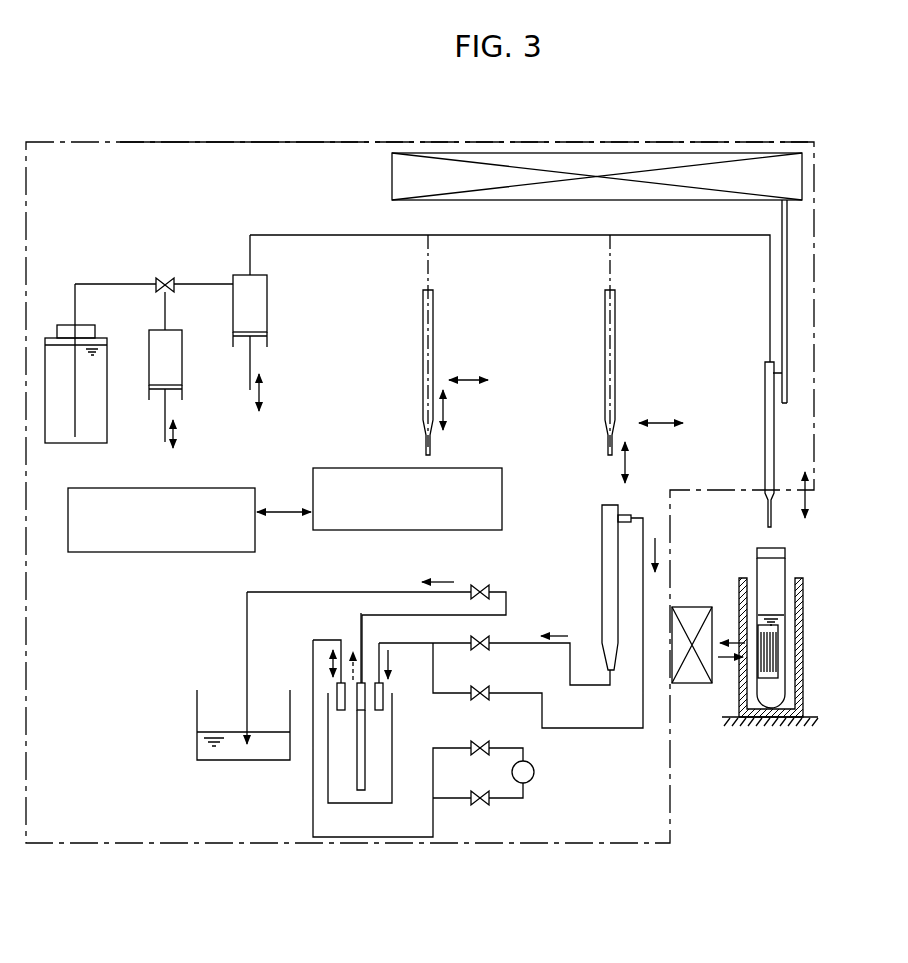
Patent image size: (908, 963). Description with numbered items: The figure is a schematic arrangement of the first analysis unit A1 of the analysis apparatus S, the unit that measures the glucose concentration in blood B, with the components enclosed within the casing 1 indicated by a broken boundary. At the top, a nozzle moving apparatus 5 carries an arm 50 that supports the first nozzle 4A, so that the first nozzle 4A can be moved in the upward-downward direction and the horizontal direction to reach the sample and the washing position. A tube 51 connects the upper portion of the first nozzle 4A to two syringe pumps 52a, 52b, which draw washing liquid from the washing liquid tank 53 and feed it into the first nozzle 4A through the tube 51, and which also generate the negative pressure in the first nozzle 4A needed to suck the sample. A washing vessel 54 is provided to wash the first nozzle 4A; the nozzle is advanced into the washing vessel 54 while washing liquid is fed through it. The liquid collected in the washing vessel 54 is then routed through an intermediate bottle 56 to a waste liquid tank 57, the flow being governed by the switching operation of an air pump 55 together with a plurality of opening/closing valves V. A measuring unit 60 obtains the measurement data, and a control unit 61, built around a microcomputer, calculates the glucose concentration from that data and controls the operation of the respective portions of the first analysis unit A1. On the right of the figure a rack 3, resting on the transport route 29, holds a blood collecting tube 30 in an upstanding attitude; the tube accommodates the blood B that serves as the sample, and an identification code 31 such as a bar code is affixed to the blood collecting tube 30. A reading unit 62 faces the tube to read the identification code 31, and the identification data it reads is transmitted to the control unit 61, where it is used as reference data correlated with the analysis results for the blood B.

The analysis apparatus S is at (140, 128).
The first analysis unit A1 is at (232, 140).
The casing 1 is at (358, 140).
The nozzle moving apparatus 5 is at (749, 172).
The arm 50 is at (788, 273).
The tube 51 is at (520, 236).
The first nozzle 4A is at (433, 333).
The syringe pump 52a is at (182, 363).
The syringe pump 52b is at (267, 320).
The washing liquid tank 53 is at (107, 385).
The control unit 61 is at (225, 488).
The measuring unit 60 is at (497, 468).
The opening/closing valves V is at (480, 585).
The washing vessel 54 is at (601, 545).
The waste liquid tank 57 is at (197, 700).
The intermediate bottle 56 is at (392, 722).
The air pump 55 is at (534, 772).
The reading unit 62 is at (695, 684).
The rack 3 is at (806, 648).
The transport route 29 is at (812, 715).
The blood collecting tube 30 is at (779, 567).
The blood B is at (781, 621).
The identification code 31 is at (773, 660).